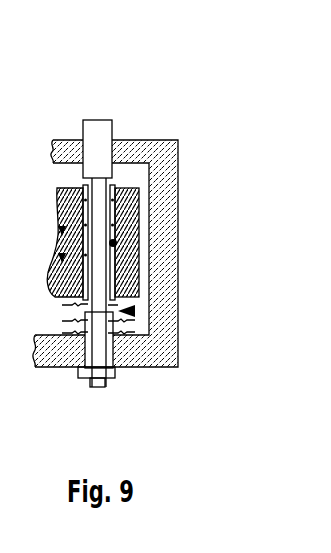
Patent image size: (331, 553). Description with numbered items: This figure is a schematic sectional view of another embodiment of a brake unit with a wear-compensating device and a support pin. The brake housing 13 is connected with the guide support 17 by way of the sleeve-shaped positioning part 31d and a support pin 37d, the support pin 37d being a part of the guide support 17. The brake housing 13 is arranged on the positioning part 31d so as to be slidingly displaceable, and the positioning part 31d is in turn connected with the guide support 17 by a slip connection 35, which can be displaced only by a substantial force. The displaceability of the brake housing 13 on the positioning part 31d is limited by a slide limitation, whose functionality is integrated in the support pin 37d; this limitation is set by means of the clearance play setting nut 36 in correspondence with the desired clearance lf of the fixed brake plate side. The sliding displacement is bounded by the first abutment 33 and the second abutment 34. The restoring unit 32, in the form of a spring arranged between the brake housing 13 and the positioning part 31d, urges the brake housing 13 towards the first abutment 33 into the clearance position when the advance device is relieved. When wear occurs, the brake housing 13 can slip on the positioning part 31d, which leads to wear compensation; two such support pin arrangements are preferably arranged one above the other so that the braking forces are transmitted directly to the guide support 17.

The support pin 37d is at (105, 125).
The first abutment 33 is at (85, 178).
The guide support 17 is at (160, 178).
The brake housing 13 is at (159, 231).
The positioning part 31d is at (139, 232).
The slip connection 35 is at (116, 245).
The clearance lf is at (135, 311).
The restoring unit 32 is at (113, 322).
The second abutment 34 is at (85, 312).
The clearance play setting nut 36 is at (113, 376).